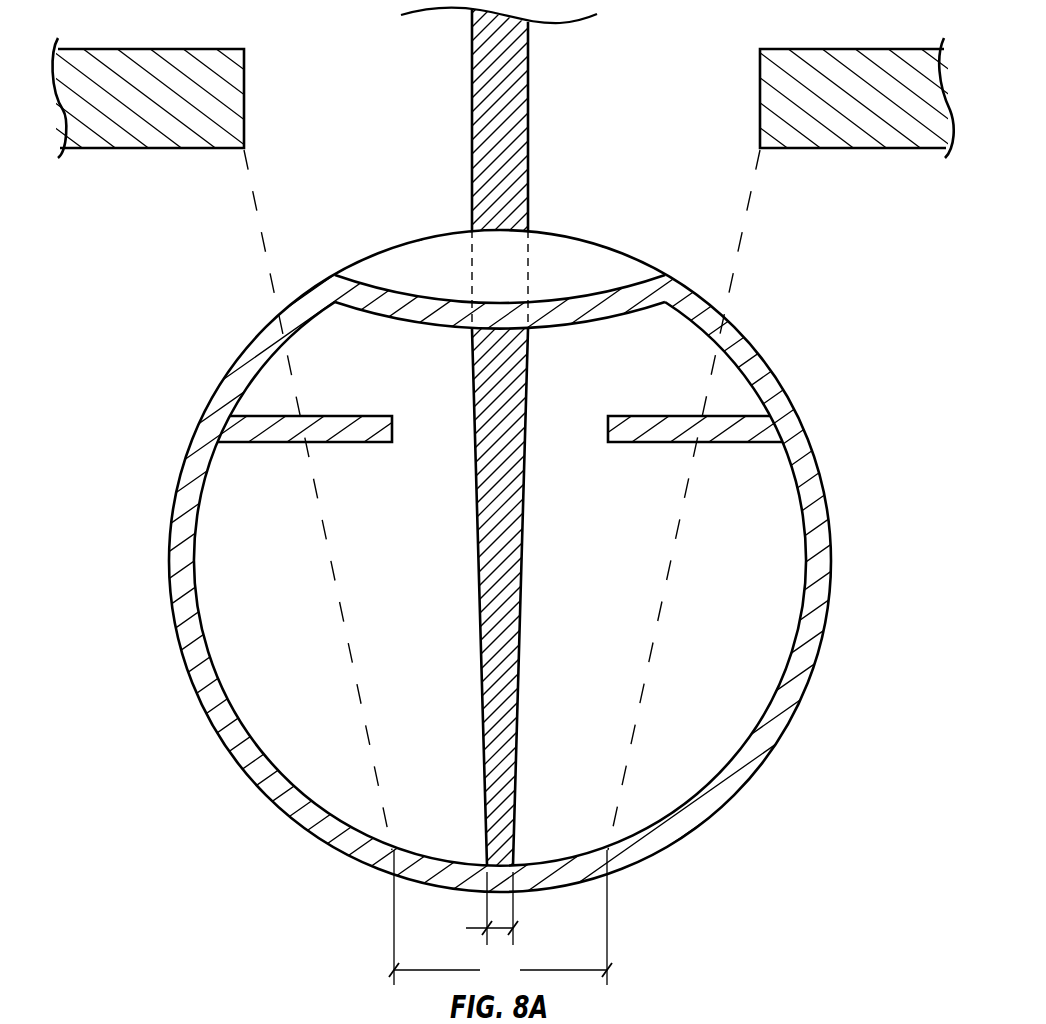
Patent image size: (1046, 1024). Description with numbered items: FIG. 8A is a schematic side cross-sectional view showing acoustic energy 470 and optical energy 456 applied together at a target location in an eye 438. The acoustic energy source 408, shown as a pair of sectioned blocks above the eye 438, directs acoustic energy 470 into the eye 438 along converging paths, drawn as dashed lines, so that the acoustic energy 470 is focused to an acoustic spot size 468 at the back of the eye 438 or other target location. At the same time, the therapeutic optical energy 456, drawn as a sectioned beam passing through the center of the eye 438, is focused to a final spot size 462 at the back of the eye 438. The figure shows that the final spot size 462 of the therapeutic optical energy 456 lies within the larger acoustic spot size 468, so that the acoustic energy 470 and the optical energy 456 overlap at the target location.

The acoustic energy source 408 is at (830, 70).
The eye 438 is at (794, 335).
The therapeutic optical energy 456 is at (515, 494).
The acoustic energy 470 is at (655, 622).
The final spot size 462 is at (474, 908).
The acoustic spot size 468 is at (500, 917).